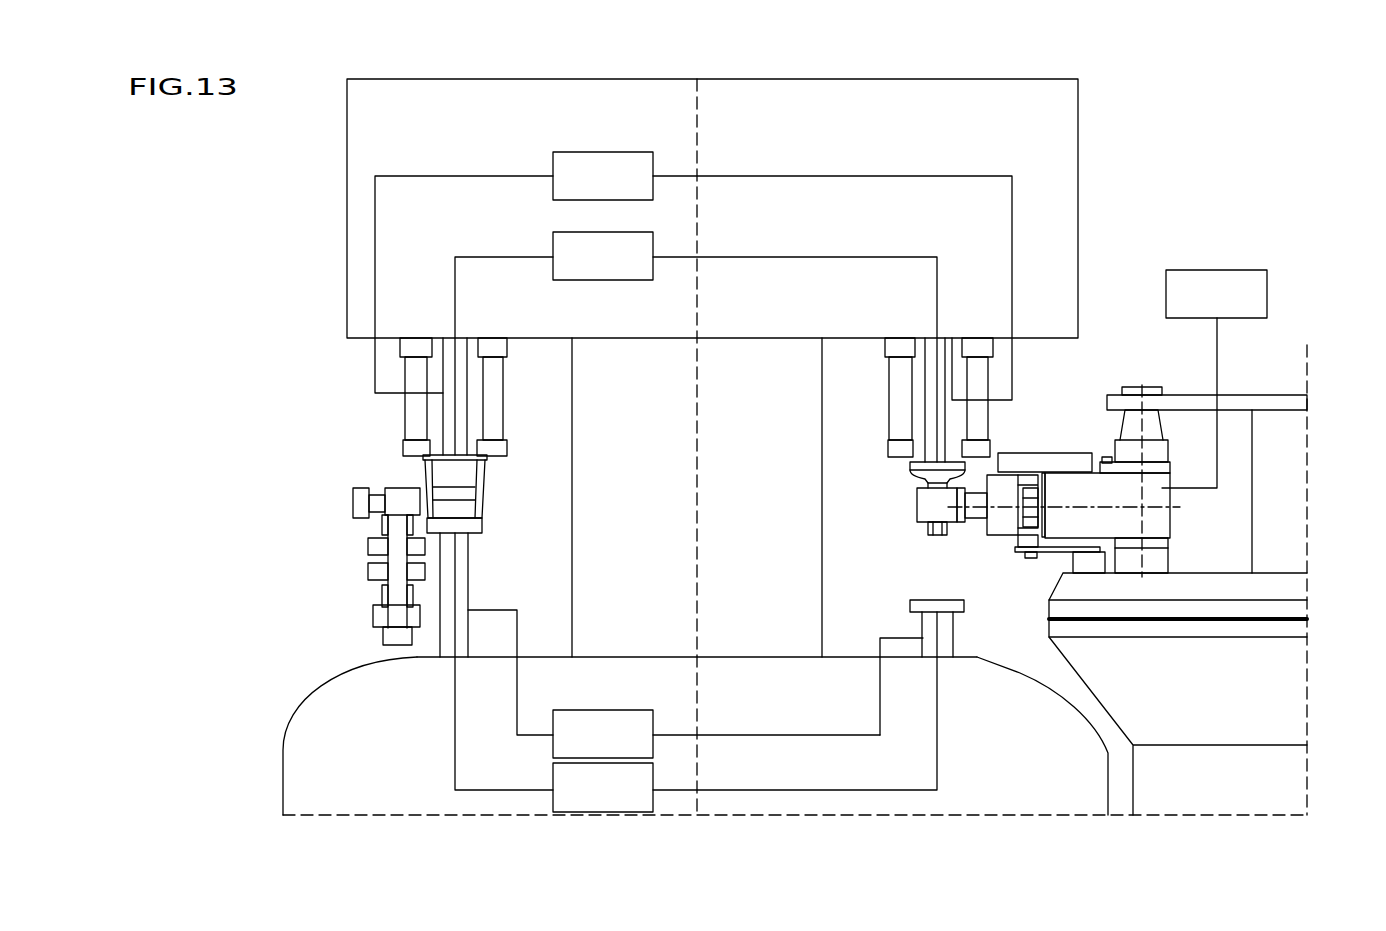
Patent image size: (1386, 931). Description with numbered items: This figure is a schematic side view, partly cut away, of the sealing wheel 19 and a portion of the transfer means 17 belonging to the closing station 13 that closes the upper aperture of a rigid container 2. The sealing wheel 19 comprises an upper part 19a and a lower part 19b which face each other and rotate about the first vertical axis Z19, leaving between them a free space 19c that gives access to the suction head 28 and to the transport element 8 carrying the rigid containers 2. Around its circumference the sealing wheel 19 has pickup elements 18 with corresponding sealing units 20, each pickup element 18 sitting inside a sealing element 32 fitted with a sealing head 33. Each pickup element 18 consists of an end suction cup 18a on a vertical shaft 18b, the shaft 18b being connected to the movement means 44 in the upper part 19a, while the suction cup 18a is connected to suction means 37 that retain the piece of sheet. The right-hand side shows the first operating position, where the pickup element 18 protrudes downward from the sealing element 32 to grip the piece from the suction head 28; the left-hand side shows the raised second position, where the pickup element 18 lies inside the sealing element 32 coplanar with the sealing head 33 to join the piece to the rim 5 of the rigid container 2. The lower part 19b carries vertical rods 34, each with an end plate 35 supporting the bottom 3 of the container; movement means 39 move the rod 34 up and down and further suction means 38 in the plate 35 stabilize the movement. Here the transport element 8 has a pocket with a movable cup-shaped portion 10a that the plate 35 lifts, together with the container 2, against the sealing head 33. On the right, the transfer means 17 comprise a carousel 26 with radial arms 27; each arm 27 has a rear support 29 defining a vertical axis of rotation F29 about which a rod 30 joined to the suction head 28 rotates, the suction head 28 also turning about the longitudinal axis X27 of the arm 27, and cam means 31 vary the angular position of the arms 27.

The sealing wheel 19 is at (322, 172).
The upper part 19a is at (437, 122).
The lower part 19b is at (307, 755).
The free space 19c is at (848, 616).
The first vertical axis Z19 is at (698, 145).
The closing station 13 is at (1164, 144).
The movement means 44 is at (617, 188).
The suction means 37 is at (617, 268).
The sealing element 32 is at (413, 367).
The vertical shaft 18b is at (448, 360).
The sealing head 33 is at (403, 443).
The sealing unit 20 is at (396, 456).
The end suction cup 18a is at (450, 455).
The rim 5 is at (468, 455).
The rigid container 2 is at (463, 470).
The bottom 3 is at (455, 490).
The movable cup-shaped portion 10a is at (482, 517).
The end plate 35 is at (470, 527).
The vertical rod 34 is at (447, 642).
The movement means 39 is at (617, 746).
The further suction means 38 is at (617, 800).
The transport element 8 is at (344, 559).
The pickup element 18 is at (947, 453).
The suction head 28 is at (917, 478).
The rod 30 is at (1052, 497).
The rear support 29 is at (1165, 513).
The arm 27 is at (1155, 530).
The axis of longitudinal extension X27 is at (1073, 560).
The vertical axis of rotation F29 is at (1126, 388).
The cam means 31 is at (1230, 306).
The transfer means 17 is at (1270, 378).
The carousel 26 is at (1282, 455).